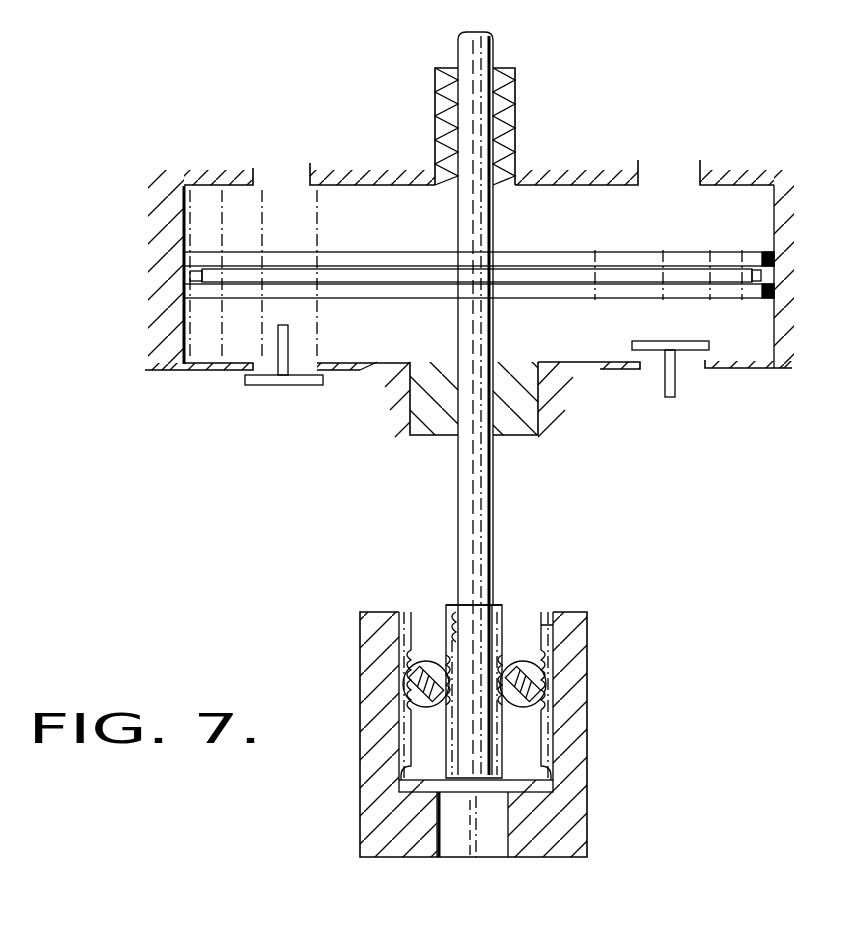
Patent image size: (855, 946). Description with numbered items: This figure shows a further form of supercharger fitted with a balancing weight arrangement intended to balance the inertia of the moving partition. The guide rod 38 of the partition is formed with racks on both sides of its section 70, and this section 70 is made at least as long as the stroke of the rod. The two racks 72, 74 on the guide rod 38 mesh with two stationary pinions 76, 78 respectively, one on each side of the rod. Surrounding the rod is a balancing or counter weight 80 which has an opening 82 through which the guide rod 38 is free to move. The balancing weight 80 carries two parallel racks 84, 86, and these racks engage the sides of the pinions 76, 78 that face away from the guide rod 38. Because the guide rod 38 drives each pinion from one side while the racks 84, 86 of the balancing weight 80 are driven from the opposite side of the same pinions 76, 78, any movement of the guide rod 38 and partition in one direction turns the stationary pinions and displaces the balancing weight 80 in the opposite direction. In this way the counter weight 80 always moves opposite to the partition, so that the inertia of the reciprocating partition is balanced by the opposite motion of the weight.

The guide rod 38 is at (495, 46).
The section 70 is at (508, 610).
The rack 72 is at (500, 612).
The rack 74 is at (447, 612).
The stationary pinion 76 is at (406, 678).
The stationary pinion 78 is at (540, 690).
The balancing weight 80 is at (552, 815).
The opening 82 is at (447, 830).
The rack 84 is at (410, 748).
The rack 86 is at (537, 730).